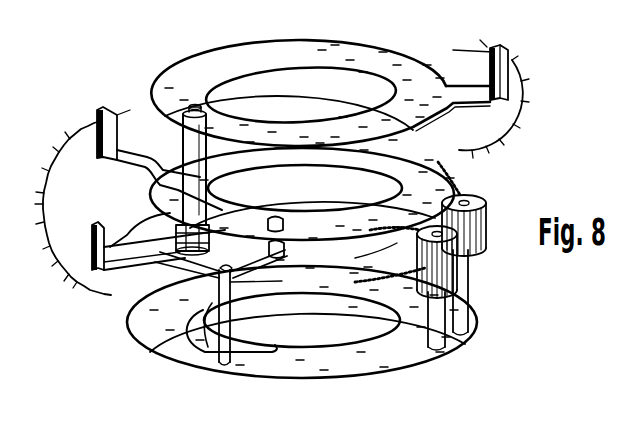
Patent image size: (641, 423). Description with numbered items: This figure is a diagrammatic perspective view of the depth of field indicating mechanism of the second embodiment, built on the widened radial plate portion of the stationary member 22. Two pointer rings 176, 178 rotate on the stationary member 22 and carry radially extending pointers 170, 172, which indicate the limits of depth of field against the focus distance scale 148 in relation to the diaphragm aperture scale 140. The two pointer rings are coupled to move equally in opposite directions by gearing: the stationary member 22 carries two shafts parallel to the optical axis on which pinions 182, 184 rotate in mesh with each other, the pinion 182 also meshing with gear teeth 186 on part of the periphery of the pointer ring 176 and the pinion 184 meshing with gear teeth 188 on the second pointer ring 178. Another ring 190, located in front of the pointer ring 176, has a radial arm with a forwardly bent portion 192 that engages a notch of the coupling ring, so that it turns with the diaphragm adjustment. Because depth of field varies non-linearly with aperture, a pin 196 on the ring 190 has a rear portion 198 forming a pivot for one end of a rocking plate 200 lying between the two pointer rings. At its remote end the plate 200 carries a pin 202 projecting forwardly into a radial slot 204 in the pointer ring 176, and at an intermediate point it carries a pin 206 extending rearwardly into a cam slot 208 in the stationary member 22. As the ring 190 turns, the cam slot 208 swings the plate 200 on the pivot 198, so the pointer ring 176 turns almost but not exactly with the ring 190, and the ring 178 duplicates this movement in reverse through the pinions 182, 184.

The stationary member 22 is at (361, 362).
The diaphragm aperture scale 140 is at (532, 91).
The focus distance scale 148 is at (56, 201).
The pointer 170 is at (107, 107).
The pointer 172 is at (100, 226).
The pointer ring 176 is at (398, 159).
The pointer ring 178 is at (323, 270).
The pinion 182 is at (478, 201).
The pinion 184 is at (453, 268).
The gear teeth 186 is at (453, 189).
The gear teeth 188 is at (392, 281).
The ring 190 is at (388, 64).
The forwardly bent portion 192 is at (494, 69).
The pin 196 is at (186, 141).
The rear portion of pin 198 is at (176, 265).
The rocking plate 200 is at (253, 265).
The pin 202 is at (285, 248).
The radial slot 204 is at (285, 225).
The pin 206 is at (230, 318).
The cam slot 208 is at (272, 356).